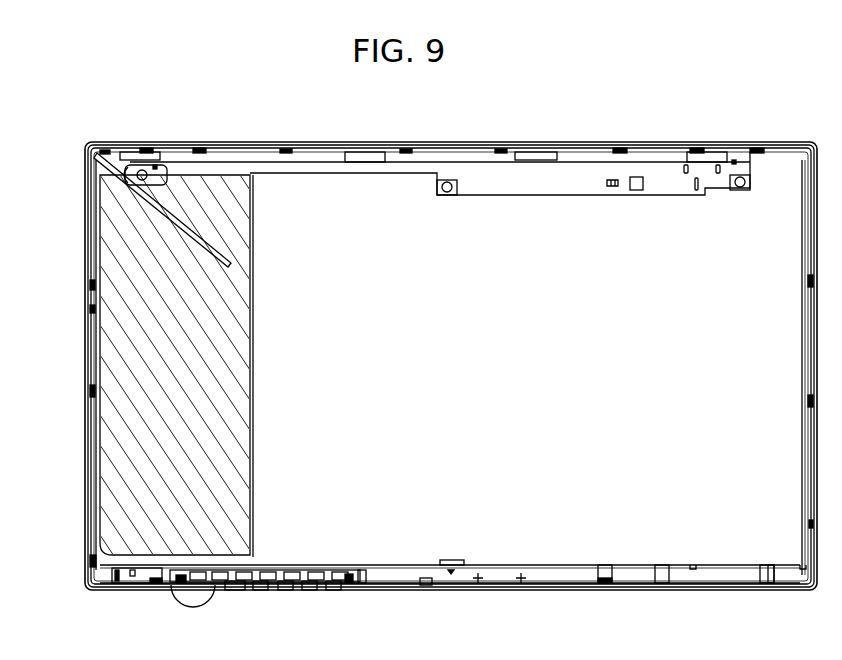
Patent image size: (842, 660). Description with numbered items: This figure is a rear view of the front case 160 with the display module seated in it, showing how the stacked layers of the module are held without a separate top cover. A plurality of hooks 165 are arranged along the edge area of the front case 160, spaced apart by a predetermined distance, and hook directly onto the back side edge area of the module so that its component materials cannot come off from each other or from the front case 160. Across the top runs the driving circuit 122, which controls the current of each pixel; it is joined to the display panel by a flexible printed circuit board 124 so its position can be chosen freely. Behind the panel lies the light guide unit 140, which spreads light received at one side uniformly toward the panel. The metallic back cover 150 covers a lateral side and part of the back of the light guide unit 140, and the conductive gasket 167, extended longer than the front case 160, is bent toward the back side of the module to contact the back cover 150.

The front case 160 is at (778, 142).
The hook 165 is at (99, 148).
The flexible printed circuit board 124 is at (365, 152).
The driving circuit 122 is at (488, 170).
The back cover 150 is at (125, 375).
The conductive gasket 167 is at (160, 222).
The light guide unit 140 is at (456, 512).